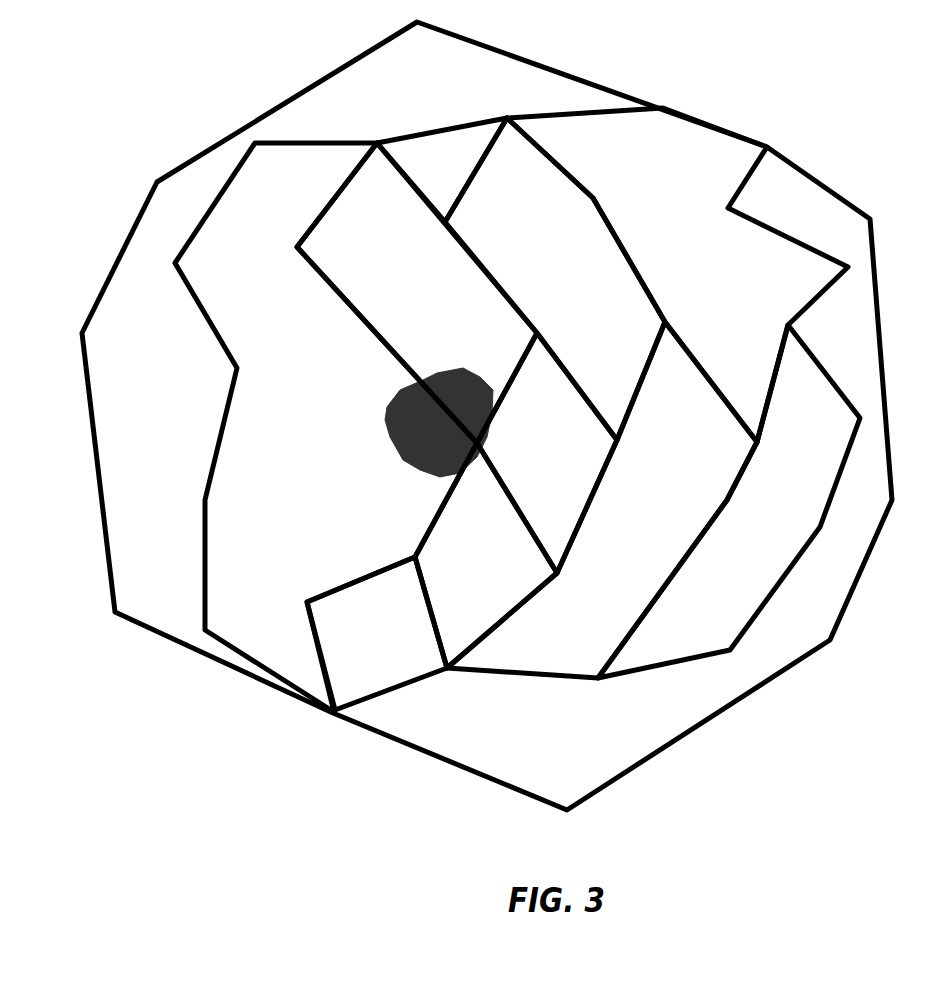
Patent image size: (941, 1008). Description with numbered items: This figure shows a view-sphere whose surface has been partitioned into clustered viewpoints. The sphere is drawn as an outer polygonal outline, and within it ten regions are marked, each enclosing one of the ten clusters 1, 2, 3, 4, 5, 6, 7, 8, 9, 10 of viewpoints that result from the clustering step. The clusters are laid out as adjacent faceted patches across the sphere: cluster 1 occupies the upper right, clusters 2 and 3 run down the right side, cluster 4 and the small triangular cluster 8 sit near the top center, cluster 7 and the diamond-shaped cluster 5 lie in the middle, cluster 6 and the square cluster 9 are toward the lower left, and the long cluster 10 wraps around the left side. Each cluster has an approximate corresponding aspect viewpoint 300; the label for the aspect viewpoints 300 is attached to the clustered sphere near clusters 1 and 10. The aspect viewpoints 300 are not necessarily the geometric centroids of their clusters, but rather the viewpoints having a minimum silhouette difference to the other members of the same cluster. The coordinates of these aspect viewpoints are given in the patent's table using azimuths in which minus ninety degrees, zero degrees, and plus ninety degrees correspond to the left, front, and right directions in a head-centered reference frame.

The aspect viewpoints 300 is at (710, 143).
The cluster 1 is at (677, 275).
The cluster 2 is at (729, 501).
The cluster 3 is at (602, 500).
The cluster 4 is at (555, 279).
The cluster 5 is at (547, 453).
The cluster 6 is at (486, 555).
The cluster 7 is at (417, 293).
The cluster 8 is at (442, 170).
The cluster 9 is at (377, 633).
The cluster 10 is at (326, 427).